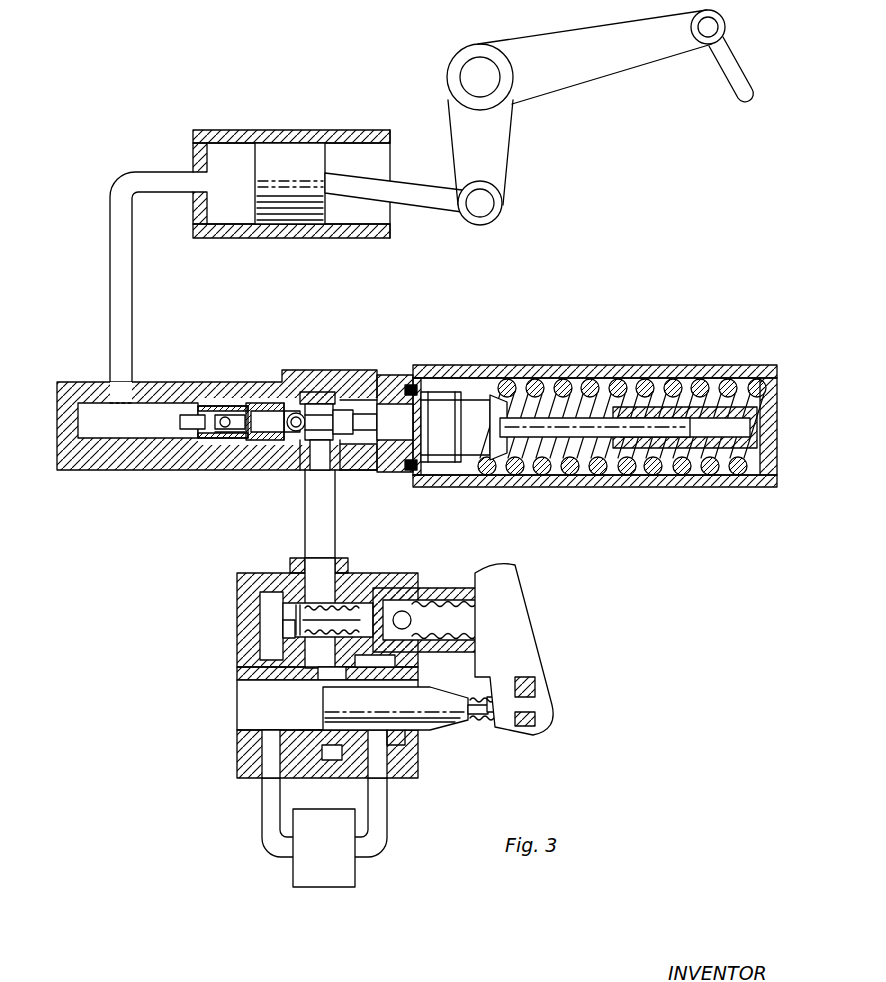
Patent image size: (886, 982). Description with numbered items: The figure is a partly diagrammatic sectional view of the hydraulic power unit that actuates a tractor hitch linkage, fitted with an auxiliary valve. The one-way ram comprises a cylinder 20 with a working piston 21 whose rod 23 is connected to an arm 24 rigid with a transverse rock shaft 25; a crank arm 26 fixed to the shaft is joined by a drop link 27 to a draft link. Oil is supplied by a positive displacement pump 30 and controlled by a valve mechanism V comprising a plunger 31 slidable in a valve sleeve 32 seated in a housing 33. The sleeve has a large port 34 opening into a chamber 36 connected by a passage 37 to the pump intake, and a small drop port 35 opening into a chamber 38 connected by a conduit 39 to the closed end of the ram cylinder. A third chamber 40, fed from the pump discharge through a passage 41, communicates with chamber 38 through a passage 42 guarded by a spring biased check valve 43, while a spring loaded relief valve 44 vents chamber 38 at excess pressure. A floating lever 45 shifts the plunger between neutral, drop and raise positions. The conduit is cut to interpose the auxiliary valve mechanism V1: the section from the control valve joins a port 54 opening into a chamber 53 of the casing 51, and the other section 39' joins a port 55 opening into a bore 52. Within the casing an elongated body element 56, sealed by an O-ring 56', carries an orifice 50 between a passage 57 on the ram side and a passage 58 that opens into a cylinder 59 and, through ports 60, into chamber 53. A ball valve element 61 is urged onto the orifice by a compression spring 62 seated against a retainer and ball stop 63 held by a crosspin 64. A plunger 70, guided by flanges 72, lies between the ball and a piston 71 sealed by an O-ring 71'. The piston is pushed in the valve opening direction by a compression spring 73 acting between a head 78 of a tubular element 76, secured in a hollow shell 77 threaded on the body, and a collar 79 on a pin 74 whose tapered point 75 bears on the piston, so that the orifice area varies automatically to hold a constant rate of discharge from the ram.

The cylinder 20 is at (292, 132).
The working piston 21 is at (300, 216).
The rod 23 is at (432, 207).
The arm 24 is at (495, 158).
The rock shaft 25 is at (476, 64).
The crank arm 26 is at (598, 68).
The drop link 27 is at (728, 76).
The conduit section 39' is at (151, 277).
The casing 51 is at (70, 470).
The cylindrical bore 52 is at (117, 432).
The port 55 is at (127, 384).
The spring retainer and ball stop 63 is at (211, 404).
The crosspin 64 is at (226, 408).
The compression spring 62 is at (259, 402).
The movable valve element 61 is at (291, 402).
The passage 57 is at (225, 437).
The body element 56 is at (276, 460).
The chamber 53 is at (307, 390).
The orifice 50 is at (318, 398).
The passage 58 is at (339, 404).
The O-ring 56' is at (363, 381).
The ports 60 is at (301, 442).
The plunger 70 is at (322, 442).
The port 54 is at (338, 472).
The auxiliary valve mechanism V1 is at (236, 473).
The flanges 72 is at (374, 386).
The cylinder 59 is at (430, 394).
The hollow shell 77 is at (672, 372).
The head 78 is at (776, 468).
The compression spring 73 is at (655, 472).
The piston 71 is at (458, 400).
The O-ring 71' is at (418, 394).
The tapered point 75 is at (415, 462).
The collar 79 is at (502, 408).
The tubular element 76 is at (730, 448).
The pin 74 is at (592, 440).
The conduit 39 is at (340, 521).
The housing 33 is at (240, 582).
The chamber 40 is at (260, 621).
The check valve 43 is at (285, 602).
The passage 42 is at (283, 640).
The relief valve 44 is at (415, 606).
The chamber 36 is at (395, 664).
The valve mechanism V is at (236, 690).
The valve sleeve 32 is at (240, 740).
The chamber 38 is at (331, 766).
The drop port 35 is at (305, 728).
The plunger 31 is at (420, 716).
The floating lever 45 is at (525, 650).
The port 34 is at (388, 772).
The passage 41 is at (262, 832).
The passage 37 is at (387, 832).
The pump 30 is at (328, 887).